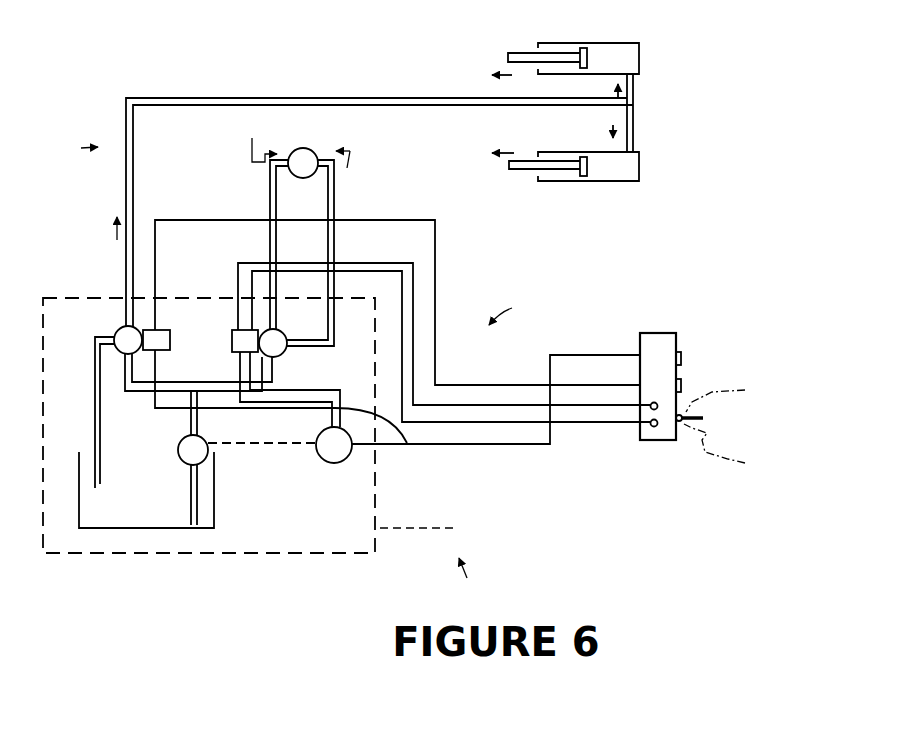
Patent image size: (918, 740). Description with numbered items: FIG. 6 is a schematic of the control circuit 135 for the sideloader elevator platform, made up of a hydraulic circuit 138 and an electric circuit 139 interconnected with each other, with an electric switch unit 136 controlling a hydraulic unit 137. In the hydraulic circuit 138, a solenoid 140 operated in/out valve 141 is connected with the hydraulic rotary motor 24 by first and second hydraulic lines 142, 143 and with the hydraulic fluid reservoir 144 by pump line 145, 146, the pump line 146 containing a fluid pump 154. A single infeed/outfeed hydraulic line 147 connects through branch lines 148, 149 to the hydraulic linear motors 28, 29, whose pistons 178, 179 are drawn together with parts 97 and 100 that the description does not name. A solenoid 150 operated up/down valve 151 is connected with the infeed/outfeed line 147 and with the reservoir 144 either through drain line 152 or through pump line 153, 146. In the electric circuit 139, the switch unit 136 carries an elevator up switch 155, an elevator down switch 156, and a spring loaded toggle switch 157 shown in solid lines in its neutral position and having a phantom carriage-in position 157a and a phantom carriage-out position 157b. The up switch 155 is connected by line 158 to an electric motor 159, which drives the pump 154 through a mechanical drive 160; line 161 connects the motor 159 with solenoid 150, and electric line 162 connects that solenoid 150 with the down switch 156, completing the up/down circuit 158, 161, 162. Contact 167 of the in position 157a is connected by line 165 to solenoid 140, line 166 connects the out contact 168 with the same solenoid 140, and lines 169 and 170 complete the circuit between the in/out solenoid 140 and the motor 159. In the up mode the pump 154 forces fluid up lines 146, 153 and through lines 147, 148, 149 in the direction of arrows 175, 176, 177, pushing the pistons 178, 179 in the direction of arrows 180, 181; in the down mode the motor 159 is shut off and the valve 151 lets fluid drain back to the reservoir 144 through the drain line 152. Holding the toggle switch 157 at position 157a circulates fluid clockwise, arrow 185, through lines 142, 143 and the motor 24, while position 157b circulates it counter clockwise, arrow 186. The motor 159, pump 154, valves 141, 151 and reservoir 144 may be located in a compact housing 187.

The hydraulic rotary motor 24 is at (318, 140).
The hydraulic linear motor 28 is at (640, 170).
The hydraulic linear motor 29 is at (640, 47).
The cylinder body 97 is at (614, 117).
The piston rod 100 is at (508, 56).
The control circuit 135 is at (466, 582).
The electric switch unit 136 is at (703, 416).
The hydraulic unit 137 is at (380, 500).
The hydraulic circuit 138 is at (70, 150).
The electric circuit 139 is at (519, 311).
The solenoid 140 is at (231, 343).
The in/out valve 141 is at (285, 351).
The first hydraulic line 142 is at (269, 195).
The second hydraulic line 143 is at (336, 195).
The hydraulic fluid reservoir 144 is at (141, 530).
The pump line 145 is at (290, 393).
The pump line 146 is at (190, 435).
The infeed/outfeed hydraulic line 147 is at (353, 88).
The branch line 148 is at (634, 135).
The branch line 149 is at (634, 92).
The solenoid 150 is at (186, 323).
The up/down valve 151 is at (117, 331).
The drain line 152 is at (98, 488).
The pump line 153 is at (142, 392).
The fluid pump 154 is at (180, 463).
The elevator up switch 155 is at (683, 354).
The elevator down switch 156 is at (683, 385).
The toggle switch 157 is at (714, 418).
The carriage-in switch position 157a is at (739, 396).
The carriage-out switch position 157b is at (668, 446).
The line 158 is at (540, 446).
The electric motor 159 is at (340, 464).
The mechanical drive 160 is at (257, 445).
The line 161 is at (219, 414).
The electric line 162 is at (156, 218).
The line 165 is at (522, 370).
The line 166 is at (505, 422).
The contact 167 is at (661, 405).
The out switch contact 168 is at (653, 430).
The line 169 is at (302, 410).
The line 170 is at (404, 445).
The arrow 175 is at (116, 238).
The arrow 176 is at (609, 132).
The arrow 177 is at (614, 92).
The hydraulic piston 178 is at (592, 173).
The hydraulic piston 179 is at (590, 50).
The arrow 180 is at (522, 143).
The arrow 181 is at (496, 86).
The clockwise direction 185 is at (260, 140).
The counter clockwise direction 186 is at (352, 158).
The compact housing 187 is at (434, 531).